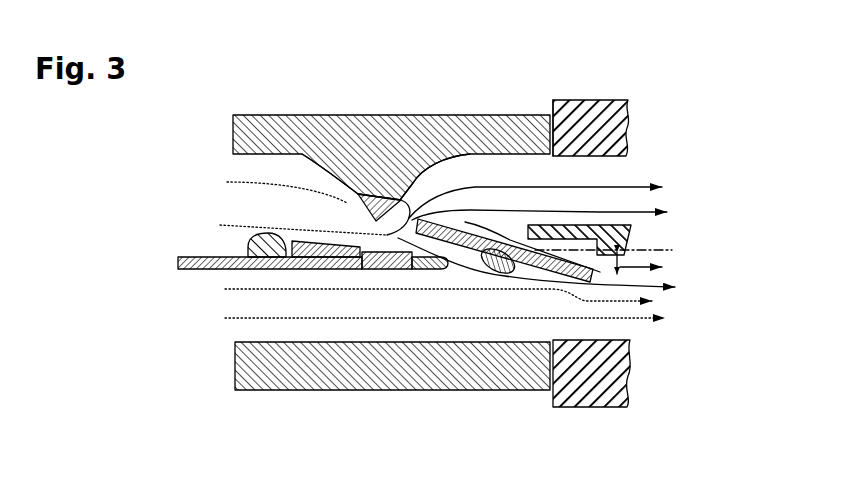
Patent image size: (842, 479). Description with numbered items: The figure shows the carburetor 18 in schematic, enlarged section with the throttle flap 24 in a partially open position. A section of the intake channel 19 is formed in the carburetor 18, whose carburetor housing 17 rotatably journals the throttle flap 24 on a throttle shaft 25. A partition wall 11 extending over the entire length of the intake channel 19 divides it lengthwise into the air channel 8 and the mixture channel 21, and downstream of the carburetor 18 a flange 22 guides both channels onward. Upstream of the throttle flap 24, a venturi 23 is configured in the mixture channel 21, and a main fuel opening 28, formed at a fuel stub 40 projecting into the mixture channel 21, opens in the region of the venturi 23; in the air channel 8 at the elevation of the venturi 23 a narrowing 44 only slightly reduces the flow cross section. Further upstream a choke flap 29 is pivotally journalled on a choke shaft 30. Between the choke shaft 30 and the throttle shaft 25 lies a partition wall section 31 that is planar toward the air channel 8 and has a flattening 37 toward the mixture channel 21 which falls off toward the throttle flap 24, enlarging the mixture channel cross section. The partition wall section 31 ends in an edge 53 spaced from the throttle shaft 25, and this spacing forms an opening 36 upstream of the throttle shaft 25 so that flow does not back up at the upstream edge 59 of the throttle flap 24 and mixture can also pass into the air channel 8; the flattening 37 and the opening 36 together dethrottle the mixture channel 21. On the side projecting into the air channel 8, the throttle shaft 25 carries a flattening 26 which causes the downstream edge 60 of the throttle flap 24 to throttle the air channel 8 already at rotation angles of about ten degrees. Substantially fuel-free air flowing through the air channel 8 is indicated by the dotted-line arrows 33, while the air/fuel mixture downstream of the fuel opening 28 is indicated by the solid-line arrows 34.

The air channel 8 is at (618, 330).
The partition wall 11 is at (633, 240).
The carburetor housing 17 is at (510, 116).
The carburetor 18 is at (280, 104).
The intake channel 19 is at (230, 299).
The mixture channel 21 is at (613, 174).
The flange 22 is at (607, 112).
The venturi 23 is at (345, 178).
The throttle flap 24 is at (458, 232).
The throttle shaft 25 is at (517, 268).
The flattening 26 is at (498, 272).
The main fuel opening 28 is at (392, 198).
The choke flap 29 is at (190, 257).
The choke shaft 30 is at (251, 241).
The partition wall section 31 is at (375, 269).
The arrows 33 is at (593, 318).
The arrows 34 is at (538, 186).
The opening 36 is at (457, 263).
The flattening 37 is at (318, 245).
The fuel stub 40 is at (373, 200).
The narrowing 44 is at (345, 342).
The edge 53 is at (423, 269).
The edge 59 is at (417, 178).
The edge 60 is at (594, 265).